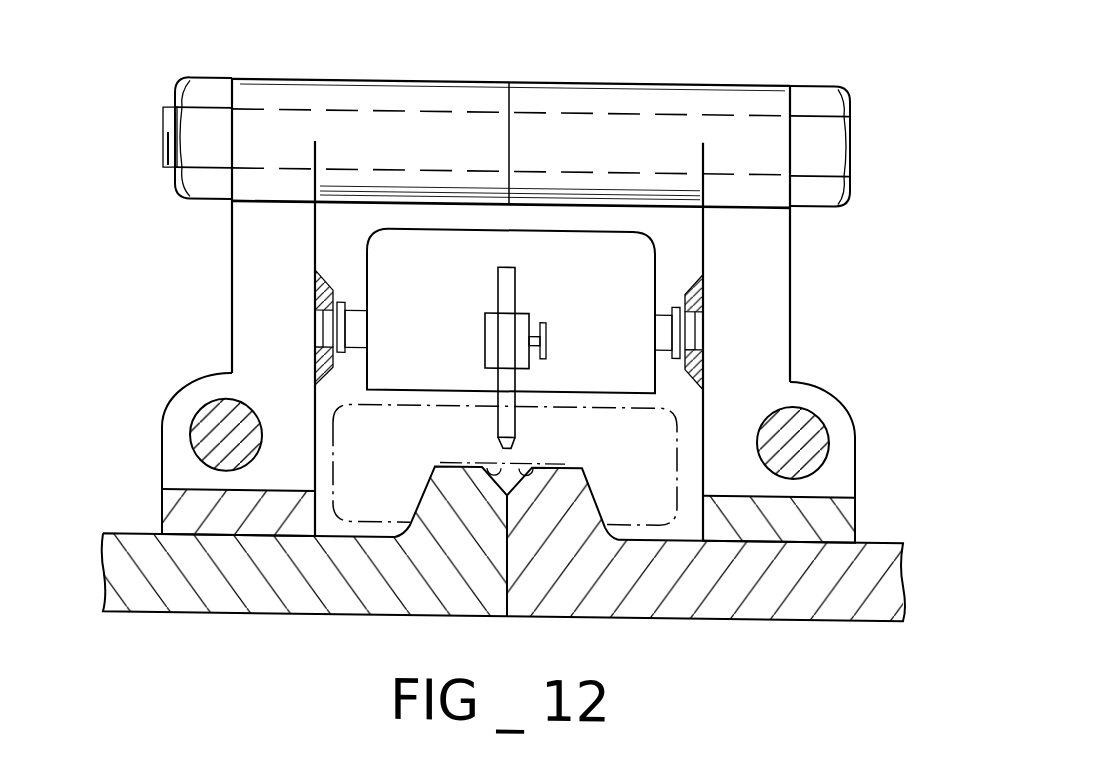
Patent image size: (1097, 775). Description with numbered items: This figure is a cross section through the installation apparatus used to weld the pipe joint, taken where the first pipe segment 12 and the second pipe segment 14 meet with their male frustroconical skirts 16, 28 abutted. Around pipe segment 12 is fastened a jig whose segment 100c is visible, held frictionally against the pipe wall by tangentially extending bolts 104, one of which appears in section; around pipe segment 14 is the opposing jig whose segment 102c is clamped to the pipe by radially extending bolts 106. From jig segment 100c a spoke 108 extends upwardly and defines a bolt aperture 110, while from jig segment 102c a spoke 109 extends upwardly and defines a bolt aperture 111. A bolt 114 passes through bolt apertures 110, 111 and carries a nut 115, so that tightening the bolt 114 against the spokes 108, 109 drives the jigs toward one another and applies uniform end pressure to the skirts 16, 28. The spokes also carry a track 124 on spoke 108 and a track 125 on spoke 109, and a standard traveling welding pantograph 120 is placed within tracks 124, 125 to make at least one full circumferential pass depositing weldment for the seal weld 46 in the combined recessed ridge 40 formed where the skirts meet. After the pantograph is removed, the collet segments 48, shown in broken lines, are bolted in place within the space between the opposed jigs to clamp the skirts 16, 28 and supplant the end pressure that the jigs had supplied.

The first pipe segment 12 is at (470, 597).
The second pipe segment 14 is at (650, 598).
The male frustroconical skirt 16 is at (455, 496).
The male frustroconical skirt 28 is at (548, 505).
The combined recessed ridge 40 is at (518, 459).
The seal weld 46 is at (497, 460).
The collet segments 48 is at (388, 451).
The jig segment 100c is at (162, 426).
The jig segment 102c is at (855, 426).
The tangentially extending bolts 104 is at (222, 417).
The radially extending bolts 106 is at (802, 415).
The spoke 108 is at (265, 235).
The spoke 109 is at (767, 237).
The bolt aperture 110 is at (345, 108).
The bolt aperture 111 is at (692, 101).
The bolt 114 is at (850, 97).
The nut 115 is at (188, 92).
The traveling welding pantograph 120 is at (612, 276).
The track 124 is at (323, 269).
The track 125 is at (688, 266).